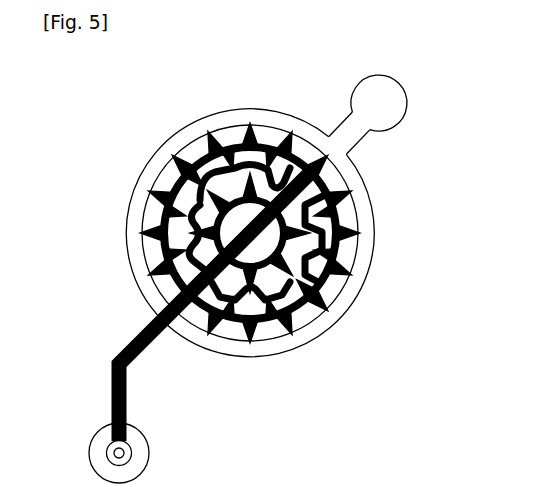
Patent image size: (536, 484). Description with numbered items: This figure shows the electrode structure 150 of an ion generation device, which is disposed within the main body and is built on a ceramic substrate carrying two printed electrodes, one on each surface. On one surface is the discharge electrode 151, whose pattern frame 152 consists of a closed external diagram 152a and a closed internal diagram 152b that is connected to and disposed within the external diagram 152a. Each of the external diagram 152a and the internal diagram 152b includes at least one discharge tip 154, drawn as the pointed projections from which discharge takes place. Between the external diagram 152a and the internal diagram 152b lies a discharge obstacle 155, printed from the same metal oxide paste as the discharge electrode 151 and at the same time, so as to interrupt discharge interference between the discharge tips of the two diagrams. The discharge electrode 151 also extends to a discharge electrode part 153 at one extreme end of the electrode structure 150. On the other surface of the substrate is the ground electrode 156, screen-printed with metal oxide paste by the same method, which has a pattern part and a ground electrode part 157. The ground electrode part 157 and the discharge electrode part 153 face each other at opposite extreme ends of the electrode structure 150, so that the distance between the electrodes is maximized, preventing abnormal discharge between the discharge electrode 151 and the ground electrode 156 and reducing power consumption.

The electrode structure 150 is at (111, 109).
The discharge electrode 151 is at (130, 395).
The pattern frame 152 is at (352, 182).
The external diagram 152a is at (333, 277).
The internal diagram 152b is at (272, 268).
The discharge electrode part 153 is at (136, 456).
The discharge tip 154 is at (220, 137).
The discharge obstacle 155 is at (320, 303).
The ground electrode 156 is at (377, 233).
The ground electrode part 157 is at (409, 93).